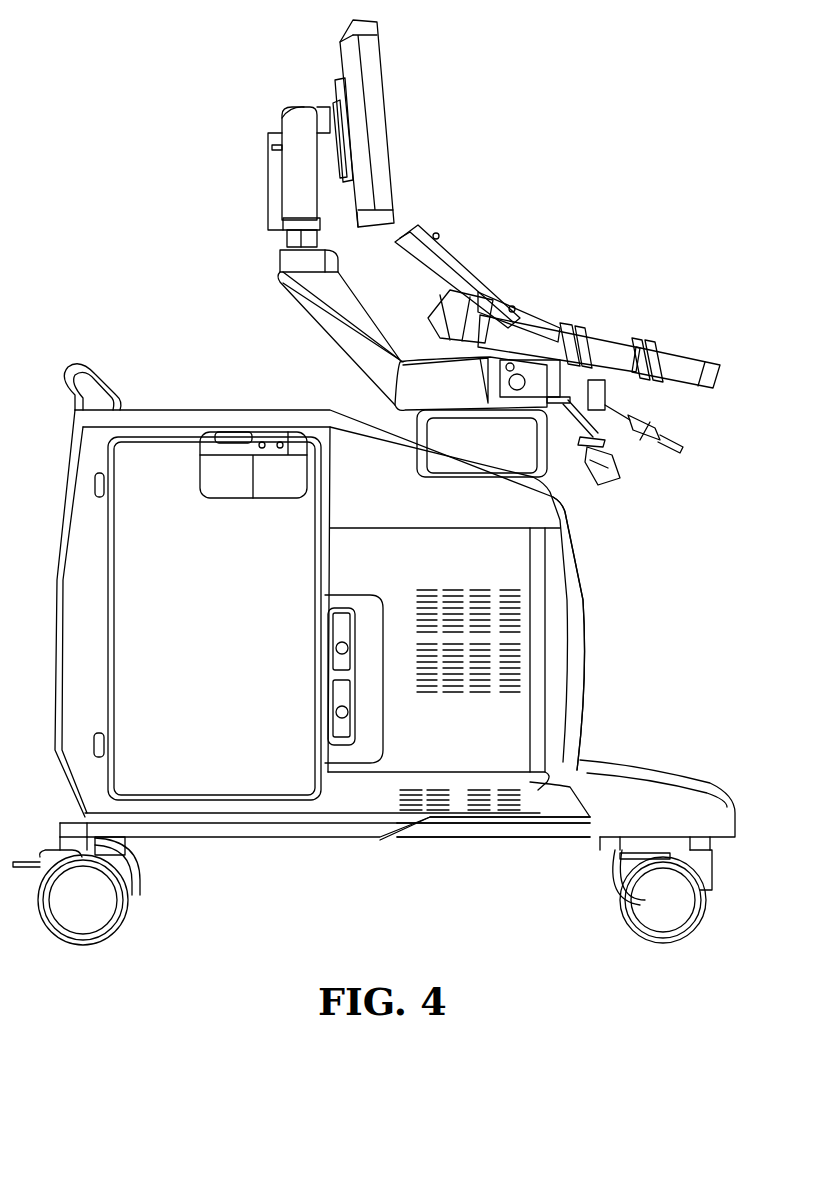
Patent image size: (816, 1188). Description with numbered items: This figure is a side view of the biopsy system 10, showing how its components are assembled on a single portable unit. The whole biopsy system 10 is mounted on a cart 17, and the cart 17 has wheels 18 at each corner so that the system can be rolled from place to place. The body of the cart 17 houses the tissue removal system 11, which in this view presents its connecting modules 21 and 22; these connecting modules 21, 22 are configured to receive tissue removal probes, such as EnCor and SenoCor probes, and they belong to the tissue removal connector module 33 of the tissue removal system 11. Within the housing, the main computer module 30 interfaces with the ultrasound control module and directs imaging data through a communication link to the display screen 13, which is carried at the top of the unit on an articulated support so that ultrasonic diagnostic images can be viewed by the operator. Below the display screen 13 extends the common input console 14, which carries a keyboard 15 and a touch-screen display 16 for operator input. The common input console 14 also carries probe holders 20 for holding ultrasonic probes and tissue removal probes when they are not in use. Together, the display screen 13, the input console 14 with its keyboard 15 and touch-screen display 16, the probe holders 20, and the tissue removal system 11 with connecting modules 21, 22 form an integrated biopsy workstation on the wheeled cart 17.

The biopsy system 10 is at (596, 158).
The tissue removal system 11 is at (228, 563).
The display screen 13 is at (385, 70).
The common input console 14 is at (543, 322).
The keyboard 15 is at (693, 345).
The touch-screen display 16 is at (462, 262).
The cart 17 is at (415, 827).
The wheels 18 is at (122, 925).
The probe holders 20 is at (575, 342).
The connecting module 21 is at (336, 648).
The connecting module 22 is at (336, 712).
The main computer module 30 is at (128, 637).
The tissue removal connector module 33 is at (596, 645).